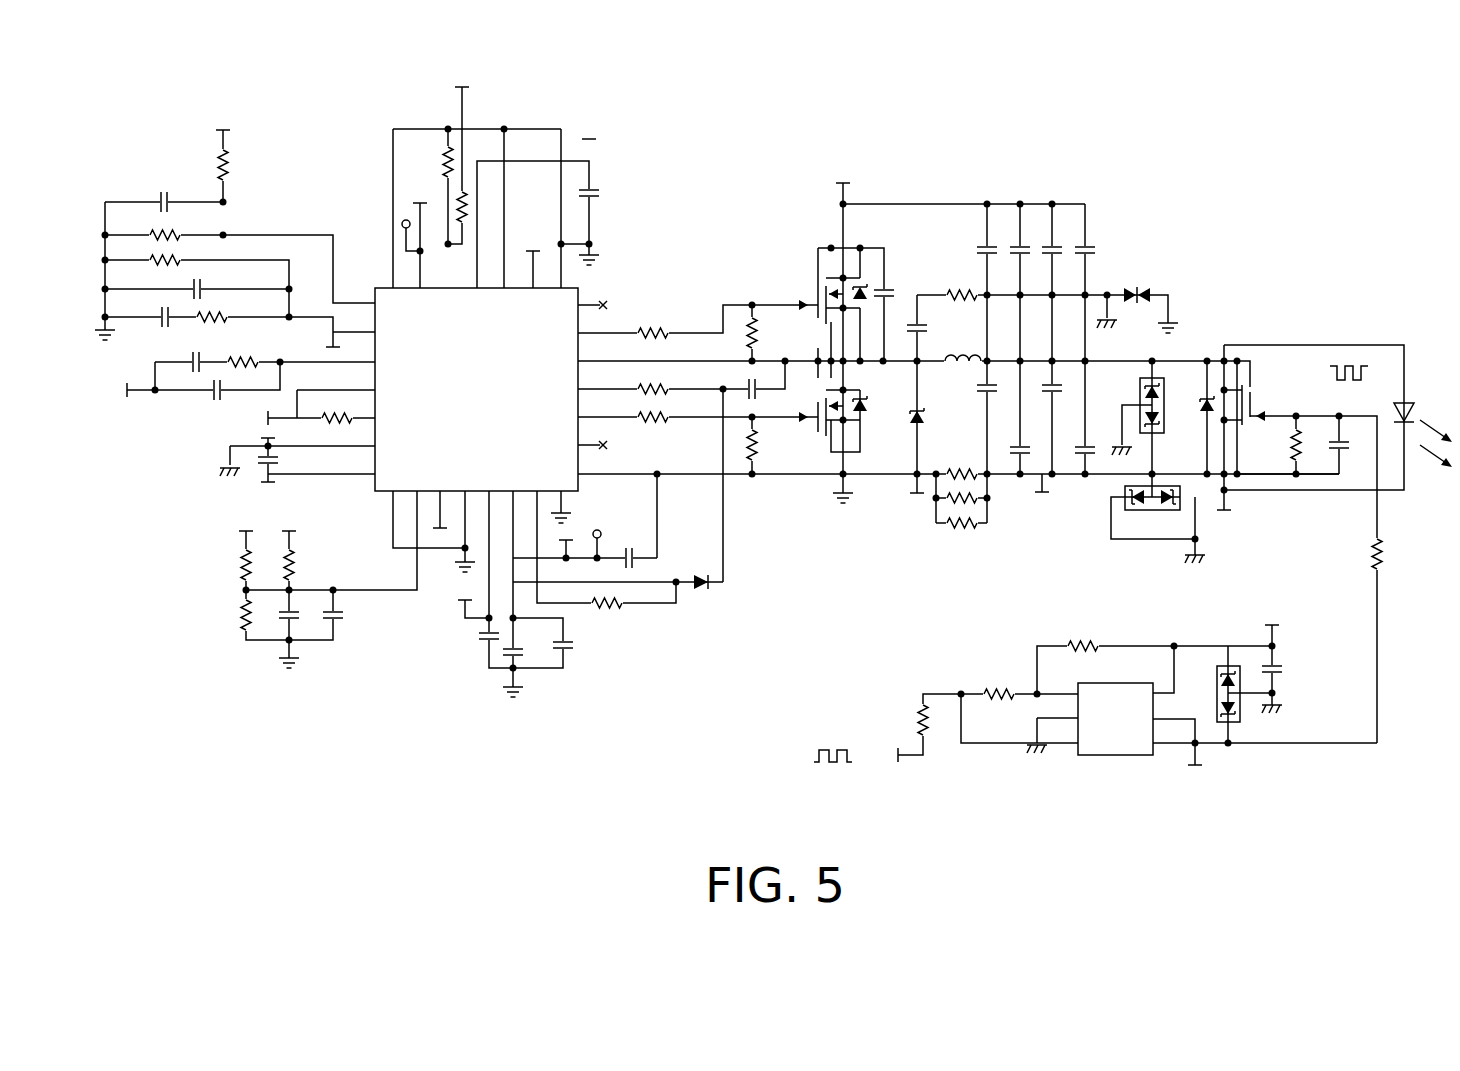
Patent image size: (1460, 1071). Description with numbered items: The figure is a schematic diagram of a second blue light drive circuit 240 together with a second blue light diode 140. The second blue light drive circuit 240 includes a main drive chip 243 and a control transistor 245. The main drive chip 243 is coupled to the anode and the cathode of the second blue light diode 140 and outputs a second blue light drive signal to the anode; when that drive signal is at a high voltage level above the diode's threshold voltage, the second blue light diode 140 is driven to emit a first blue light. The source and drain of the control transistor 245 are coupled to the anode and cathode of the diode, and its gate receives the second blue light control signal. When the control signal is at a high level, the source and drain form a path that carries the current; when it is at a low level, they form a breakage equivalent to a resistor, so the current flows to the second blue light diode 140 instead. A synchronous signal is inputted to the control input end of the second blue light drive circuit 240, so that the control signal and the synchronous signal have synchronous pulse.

The second blue light drive circuit 240 is at (775, 411).
The main drive chip 243 is at (578, 291).
The control transistor 245 is at (1204, 399).
The second blue light diode 140 is at (1423, 419).